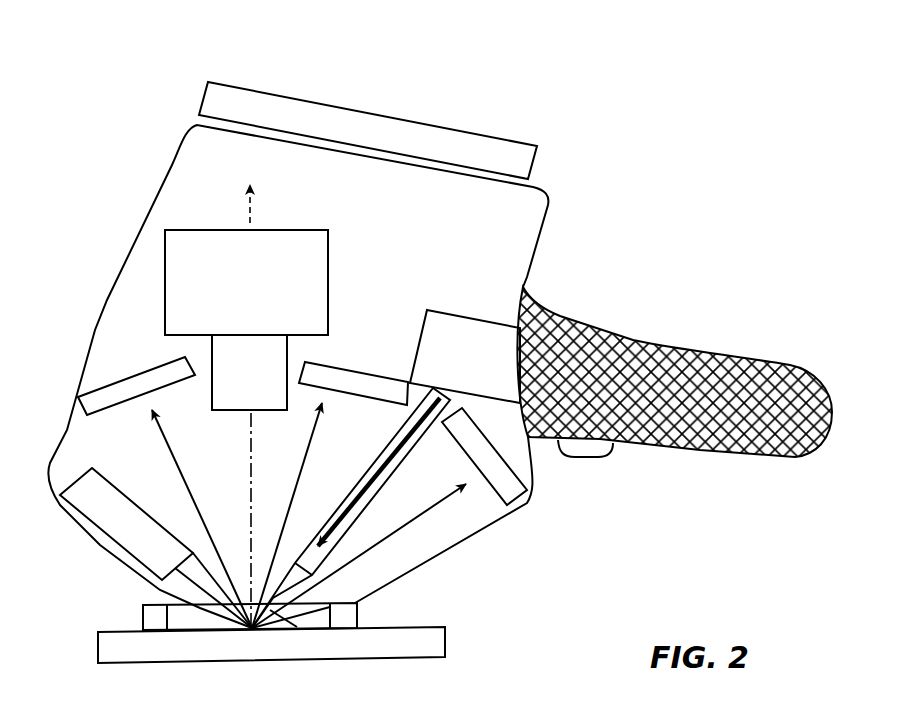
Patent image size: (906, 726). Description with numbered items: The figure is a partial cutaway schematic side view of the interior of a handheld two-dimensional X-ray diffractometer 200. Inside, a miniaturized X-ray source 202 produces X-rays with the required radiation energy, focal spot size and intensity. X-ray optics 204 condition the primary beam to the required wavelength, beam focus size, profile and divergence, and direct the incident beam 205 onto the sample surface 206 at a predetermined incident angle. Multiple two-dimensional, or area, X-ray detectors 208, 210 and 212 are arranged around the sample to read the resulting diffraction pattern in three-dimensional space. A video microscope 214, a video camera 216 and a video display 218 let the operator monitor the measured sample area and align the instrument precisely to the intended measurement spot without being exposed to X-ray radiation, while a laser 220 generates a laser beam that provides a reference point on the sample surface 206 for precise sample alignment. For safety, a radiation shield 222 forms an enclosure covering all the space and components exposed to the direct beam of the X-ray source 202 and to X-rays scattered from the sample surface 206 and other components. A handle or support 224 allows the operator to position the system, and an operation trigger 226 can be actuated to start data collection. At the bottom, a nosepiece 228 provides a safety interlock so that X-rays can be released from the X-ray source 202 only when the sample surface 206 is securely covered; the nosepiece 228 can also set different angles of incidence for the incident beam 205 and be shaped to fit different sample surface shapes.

The two-dimensional X-ray diffractometer 200 is at (594, 229).
The miniaturized X-ray source 202 is at (468, 327).
The X-ray optics 204 is at (387, 440).
The incident beam 205 is at (262, 630).
The sample surface 206 is at (430, 641).
The two-dimensional X-ray detector 208 is at (505, 487).
The two-dimensional X-ray detector 210 is at (350, 380).
The two-dimensional X-ray detector 212 is at (100, 402).
The video microscope 214 is at (232, 402).
The video camera 216 is at (320, 261).
The video display 218 is at (375, 125).
The laser 220 is at (105, 522).
The radiation shield 222 is at (175, 180).
The handle or support 224 is at (662, 345).
The operation trigger 226 is at (588, 452).
The nosepiece 228 is at (358, 607).